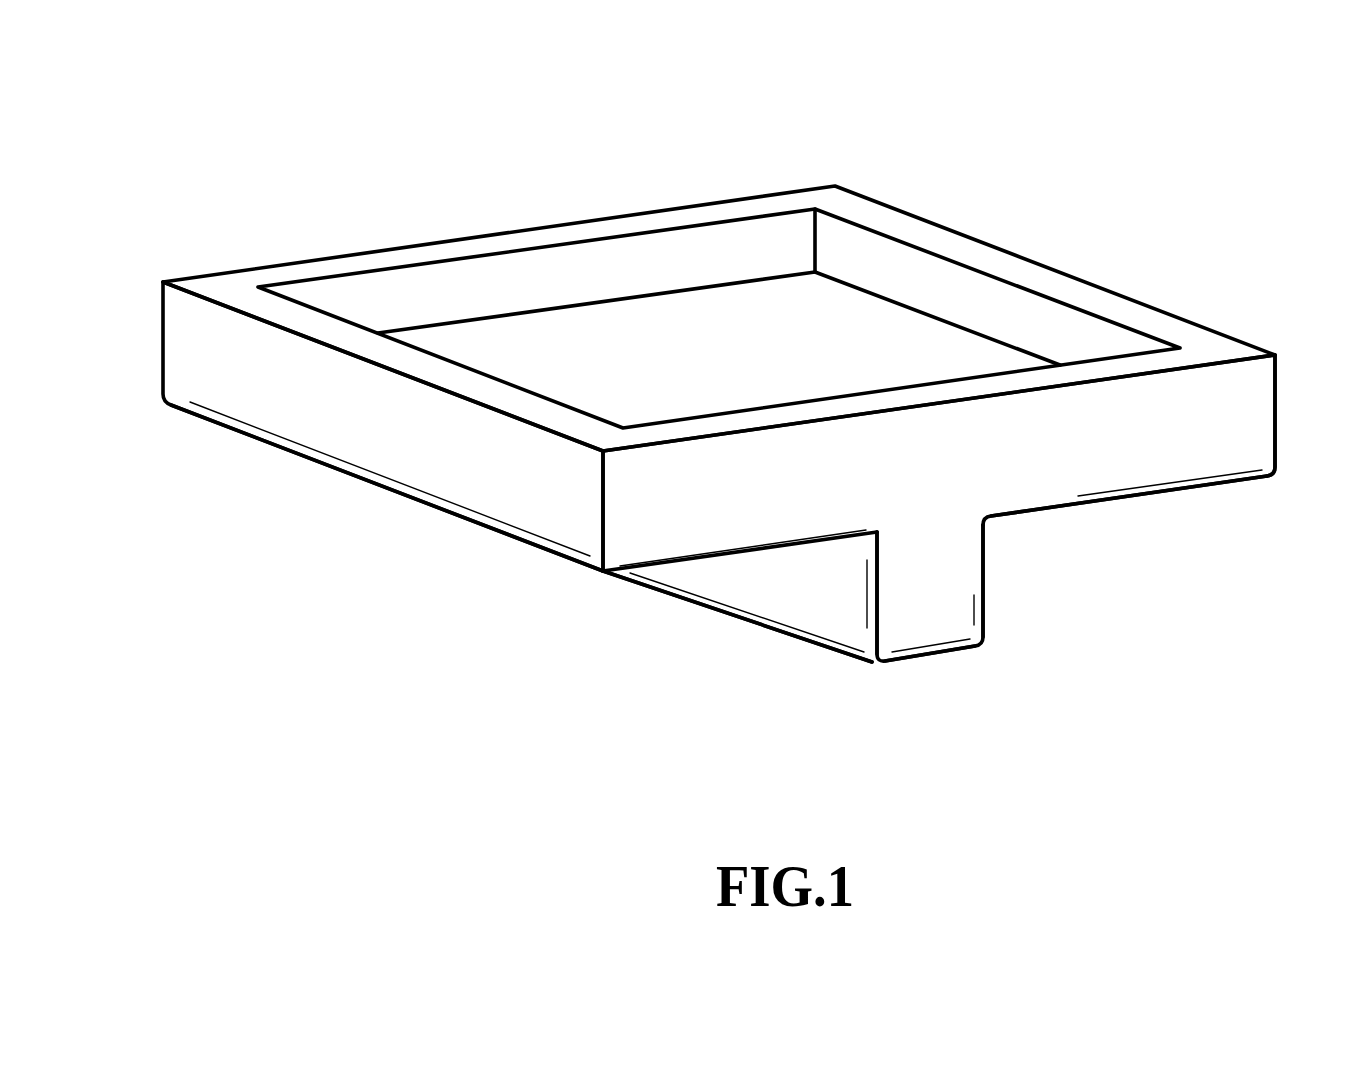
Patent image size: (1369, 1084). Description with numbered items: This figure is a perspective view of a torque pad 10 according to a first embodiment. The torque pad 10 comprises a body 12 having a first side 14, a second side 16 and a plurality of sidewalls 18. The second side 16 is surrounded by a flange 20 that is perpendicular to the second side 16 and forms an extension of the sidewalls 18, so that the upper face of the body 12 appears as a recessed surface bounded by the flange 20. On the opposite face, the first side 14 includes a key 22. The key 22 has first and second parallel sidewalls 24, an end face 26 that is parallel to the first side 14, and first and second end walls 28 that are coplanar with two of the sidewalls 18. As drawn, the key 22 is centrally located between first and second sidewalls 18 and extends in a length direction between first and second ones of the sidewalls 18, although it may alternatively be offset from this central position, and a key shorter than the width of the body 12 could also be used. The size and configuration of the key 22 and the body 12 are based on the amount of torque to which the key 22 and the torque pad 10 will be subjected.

The torque pad 10 is at (300, 176).
The body 12 is at (553, 525).
The first side 14 is at (1090, 506).
The second side 16 is at (742, 327).
The sidewalls 18 is at (1213, 431).
The flange 20 is at (990, 305).
The key 22 is at (879, 688).
The first and second parallel sidewalls 24 is at (780, 594).
The end face 26 is at (948, 656).
The first and second end walls 28 is at (947, 598).